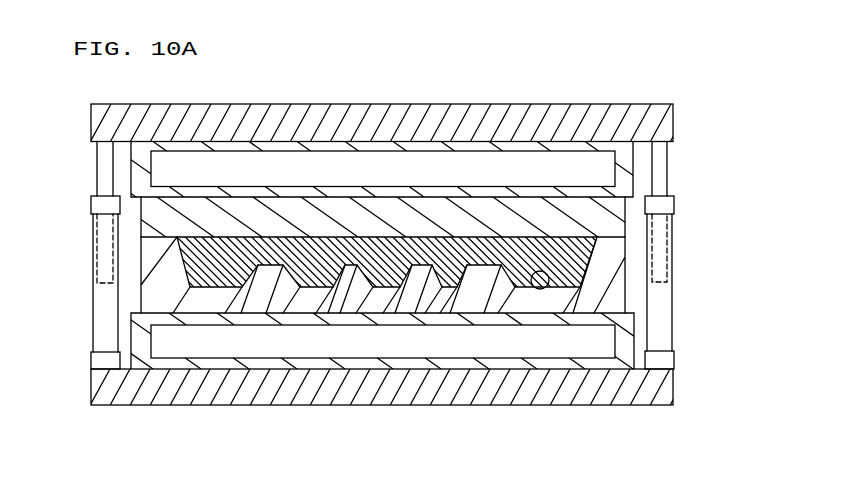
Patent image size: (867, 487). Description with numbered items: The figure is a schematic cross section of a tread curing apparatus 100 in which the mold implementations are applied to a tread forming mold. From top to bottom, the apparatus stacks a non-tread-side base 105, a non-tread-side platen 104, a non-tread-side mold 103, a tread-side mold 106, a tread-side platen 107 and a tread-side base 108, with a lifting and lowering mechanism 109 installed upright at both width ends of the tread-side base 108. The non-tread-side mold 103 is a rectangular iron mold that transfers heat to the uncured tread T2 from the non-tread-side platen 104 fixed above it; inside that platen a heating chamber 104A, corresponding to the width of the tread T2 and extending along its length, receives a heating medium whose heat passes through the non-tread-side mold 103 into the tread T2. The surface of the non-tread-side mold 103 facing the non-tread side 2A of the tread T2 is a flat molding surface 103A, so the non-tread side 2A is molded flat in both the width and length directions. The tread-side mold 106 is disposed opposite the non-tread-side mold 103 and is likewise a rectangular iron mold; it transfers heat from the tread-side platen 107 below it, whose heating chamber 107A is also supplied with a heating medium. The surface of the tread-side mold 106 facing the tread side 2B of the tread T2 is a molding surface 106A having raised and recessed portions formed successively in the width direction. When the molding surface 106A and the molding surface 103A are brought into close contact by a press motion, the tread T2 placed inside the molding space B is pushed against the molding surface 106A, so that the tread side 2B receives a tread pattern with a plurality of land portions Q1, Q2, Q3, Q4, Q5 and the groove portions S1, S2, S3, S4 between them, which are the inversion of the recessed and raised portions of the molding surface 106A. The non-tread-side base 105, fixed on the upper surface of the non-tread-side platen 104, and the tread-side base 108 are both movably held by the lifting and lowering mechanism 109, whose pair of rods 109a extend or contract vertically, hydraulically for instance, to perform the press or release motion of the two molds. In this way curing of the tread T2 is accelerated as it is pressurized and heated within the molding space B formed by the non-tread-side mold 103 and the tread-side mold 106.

The tread curing apparatus 100 is at (398, 87).
The non-tread-side base 105 is at (672, 120).
The non-tread-side platen 104 is at (622, 148).
The heating chamber 104A is at (608, 173).
The non-tread-side mold 103 is at (607, 226).
The molding surface 103A is at (590, 262).
The tread T2 is at (381, 263).
The tread-side mold 106 is at (608, 302).
The molding surface 106A is at (533, 290).
The tread-side platen 107 is at (622, 328).
The heating chamber 107A is at (612, 348).
The tread-side base 108 is at (657, 392).
The lifting and lowering mechanism 109 is at (110, 266).
The rods 109a is at (108, 177).
The non-tread side 2A is at (113, 210).
The tread side 2B is at (186, 312).
The molding space B is at (180, 262).
The land portion Q1 is at (222, 298).
The land portion Q2 is at (292, 298).
The land portion Q3 is at (364, 298).
The land portion Q4 is at (434, 298).
The land portion Q5 is at (562, 298).
The groove portion S1 is at (247, 300).
The groove portion S2 is at (320, 300).
The groove portion S3 is at (395, 300).
The groove portion S4 is at (469, 300).